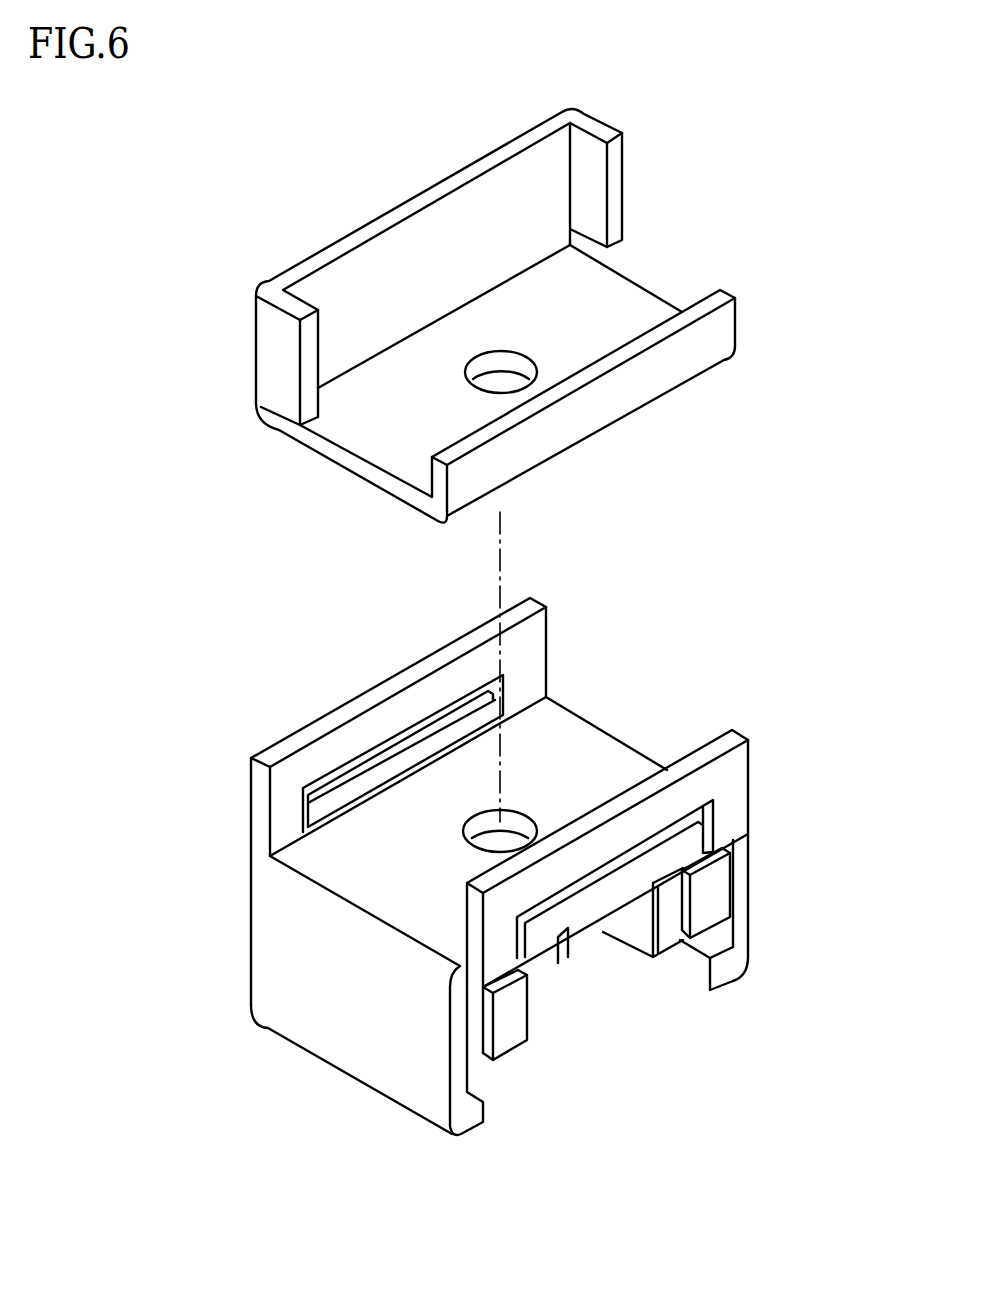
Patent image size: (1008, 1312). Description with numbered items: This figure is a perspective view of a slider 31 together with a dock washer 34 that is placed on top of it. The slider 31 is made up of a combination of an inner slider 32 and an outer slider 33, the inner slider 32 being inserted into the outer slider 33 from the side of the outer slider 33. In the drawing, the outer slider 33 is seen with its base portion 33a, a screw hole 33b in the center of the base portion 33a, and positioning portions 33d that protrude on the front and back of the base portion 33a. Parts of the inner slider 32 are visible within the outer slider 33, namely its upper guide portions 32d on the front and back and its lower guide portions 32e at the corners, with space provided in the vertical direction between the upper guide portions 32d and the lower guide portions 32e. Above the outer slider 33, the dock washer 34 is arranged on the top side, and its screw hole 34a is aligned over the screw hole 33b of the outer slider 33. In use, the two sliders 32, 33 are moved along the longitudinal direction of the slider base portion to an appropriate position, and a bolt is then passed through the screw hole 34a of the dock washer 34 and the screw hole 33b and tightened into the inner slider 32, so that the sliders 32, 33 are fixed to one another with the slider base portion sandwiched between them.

The slider 31 is at (572, 861).
The inner slider 32 is at (674, 1010).
The upper guide portions 32d is at (527, 937).
The lower guide portions 32e is at (717, 892).
The outer slider 33 is at (530, 861).
The base portion 33a is at (468, 790).
The screw hole 33b is at (512, 825).
The positioning portions 33d is at (532, 603).
The dock washer 34 is at (522, 316).
The screw hole 34a is at (502, 362).